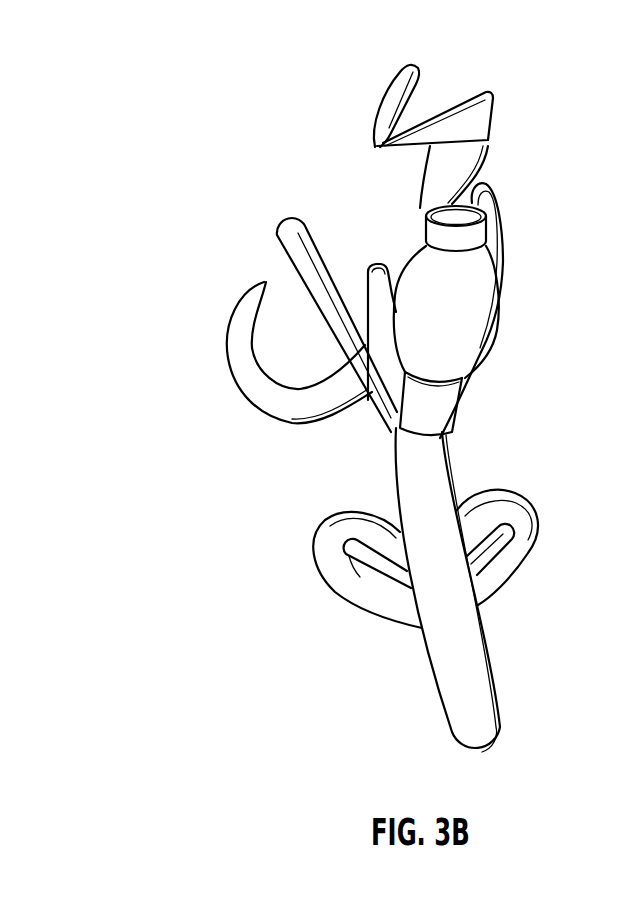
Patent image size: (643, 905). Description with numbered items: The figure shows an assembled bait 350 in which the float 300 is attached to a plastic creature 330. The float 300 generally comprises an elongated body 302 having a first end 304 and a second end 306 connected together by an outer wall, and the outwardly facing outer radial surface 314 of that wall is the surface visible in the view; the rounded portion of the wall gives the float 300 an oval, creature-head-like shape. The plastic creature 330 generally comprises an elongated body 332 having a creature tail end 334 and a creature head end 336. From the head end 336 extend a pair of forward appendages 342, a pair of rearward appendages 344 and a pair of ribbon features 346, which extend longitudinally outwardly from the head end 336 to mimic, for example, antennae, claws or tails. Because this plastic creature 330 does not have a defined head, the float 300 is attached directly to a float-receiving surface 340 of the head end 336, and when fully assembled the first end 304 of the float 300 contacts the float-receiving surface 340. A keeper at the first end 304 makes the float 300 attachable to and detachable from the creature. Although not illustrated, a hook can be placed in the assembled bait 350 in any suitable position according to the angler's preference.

The float 300 is at (491, 323).
The elongated body 302 is at (498, 304).
The first end 304 is at (440, 434).
The second end 306 is at (437, 215).
The outer radial surface 314 is at (488, 345).
The plastic creature 330 is at (438, 609).
The elongated body 332 is at (437, 609).
The creature tail end 334 is at (498, 730).
The creature head end 336 is at (397, 477).
The float-receiving surface 340 is at (394, 428).
The forward appendages 342 is at (530, 528).
The rearward appendages 344 is at (286, 216).
The ribbon features 346 is at (380, 112).
The assembled bait 350 is at (312, 118).